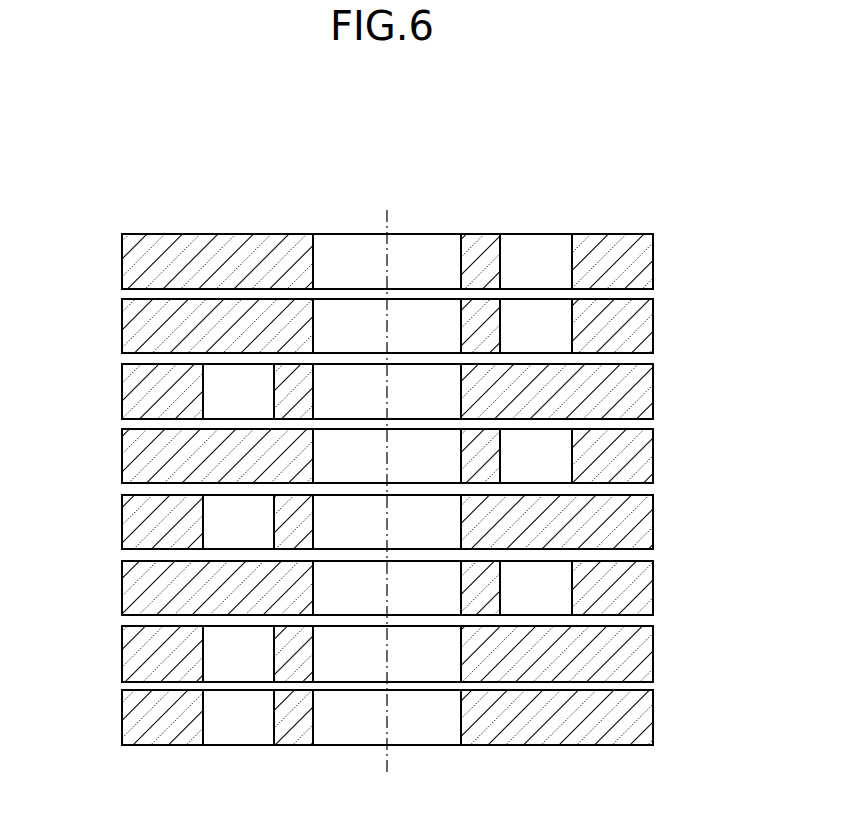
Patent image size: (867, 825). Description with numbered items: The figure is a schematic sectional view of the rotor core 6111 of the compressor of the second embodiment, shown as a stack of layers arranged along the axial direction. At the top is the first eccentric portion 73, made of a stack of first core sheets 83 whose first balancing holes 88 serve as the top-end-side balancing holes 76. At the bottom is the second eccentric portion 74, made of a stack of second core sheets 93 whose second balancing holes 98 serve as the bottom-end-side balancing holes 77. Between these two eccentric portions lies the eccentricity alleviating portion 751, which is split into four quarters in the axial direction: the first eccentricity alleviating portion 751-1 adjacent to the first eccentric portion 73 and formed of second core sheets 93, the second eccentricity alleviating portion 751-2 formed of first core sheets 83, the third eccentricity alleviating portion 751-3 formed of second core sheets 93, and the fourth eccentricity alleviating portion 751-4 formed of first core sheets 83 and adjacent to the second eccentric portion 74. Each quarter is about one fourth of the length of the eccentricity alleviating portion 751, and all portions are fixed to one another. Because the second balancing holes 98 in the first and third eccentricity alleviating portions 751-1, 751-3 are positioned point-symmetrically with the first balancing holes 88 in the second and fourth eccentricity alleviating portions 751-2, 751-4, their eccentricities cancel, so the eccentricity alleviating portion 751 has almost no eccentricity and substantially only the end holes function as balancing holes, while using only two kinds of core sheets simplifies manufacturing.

The rotor core 6111 is at (589, 157).
The second balancing holes 98 is at (240, 382).
The top-end-side balancing holes 76 is at (536, 252).
The first balancing holes 88 is at (622, 778).
The first eccentric portion 73 is at (118, 234).
The first core sheets 83 is at (432, 424).
The eccentricity alleviating portion 751 is at (118, 364).
The first eccentricity alleviating portion 751-1 is at (636, 391).
The second eccentricity alleviating portion 751-2 is at (636, 456).
The third eccentricity alleviating portion 751-3 is at (636, 521).
The fourth eccentricity alleviating portion 751-4 is at (636, 588).
The second core sheets 93 is at (432, 554).
The second eccentric portion 74 is at (118, 626).
The bottom-end-side balancing holes 77 is at (240, 727).